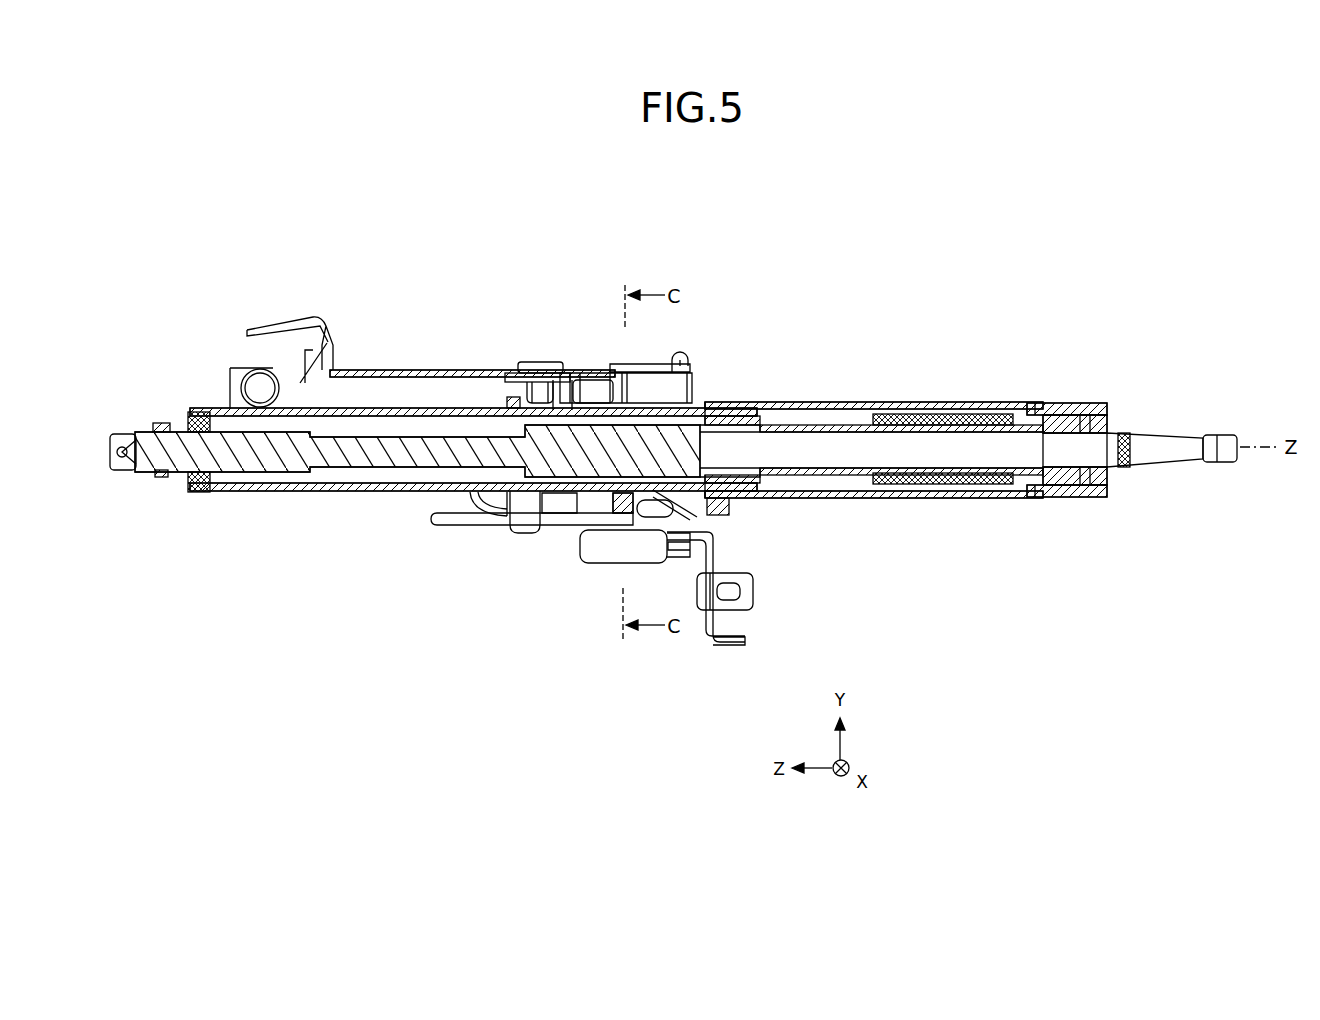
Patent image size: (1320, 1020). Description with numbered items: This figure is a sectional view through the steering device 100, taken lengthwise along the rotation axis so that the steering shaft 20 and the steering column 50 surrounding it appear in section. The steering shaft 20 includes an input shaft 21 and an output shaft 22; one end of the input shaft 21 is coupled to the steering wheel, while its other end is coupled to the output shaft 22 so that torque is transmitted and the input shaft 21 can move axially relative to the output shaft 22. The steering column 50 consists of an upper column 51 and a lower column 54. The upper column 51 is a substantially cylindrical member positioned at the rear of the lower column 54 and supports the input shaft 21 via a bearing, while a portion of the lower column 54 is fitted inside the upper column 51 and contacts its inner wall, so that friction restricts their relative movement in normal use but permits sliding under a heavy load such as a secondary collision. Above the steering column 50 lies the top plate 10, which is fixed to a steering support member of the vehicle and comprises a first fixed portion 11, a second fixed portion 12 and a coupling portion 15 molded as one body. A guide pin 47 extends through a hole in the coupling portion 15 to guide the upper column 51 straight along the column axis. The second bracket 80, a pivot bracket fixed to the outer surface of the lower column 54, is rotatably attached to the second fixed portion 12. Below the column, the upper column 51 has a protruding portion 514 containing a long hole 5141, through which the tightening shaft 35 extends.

The steering device 100 is at (816, 280).
The top plate 10 is at (491, 340).
The second fixed portion 12 is at (256, 330).
The coupling portion 15 is at (420, 370).
The lower column 54 is at (470, 408).
The guide pin 47 is at (545, 362).
The first fixed portion 11 is at (652, 360).
The upper column 51 is at (853, 402).
The steering column 50 is at (968, 367).
The steering shaft 20 is at (1143, 408).
The input shaft 21 is at (1171, 433).
The output shaft 22 is at (130, 470).
The second bracket 80 is at (216, 408).
The long hole 5141 is at (667, 510).
The protruding portion 514 is at (663, 550).
The tightening shaft 35 is at (620, 500).